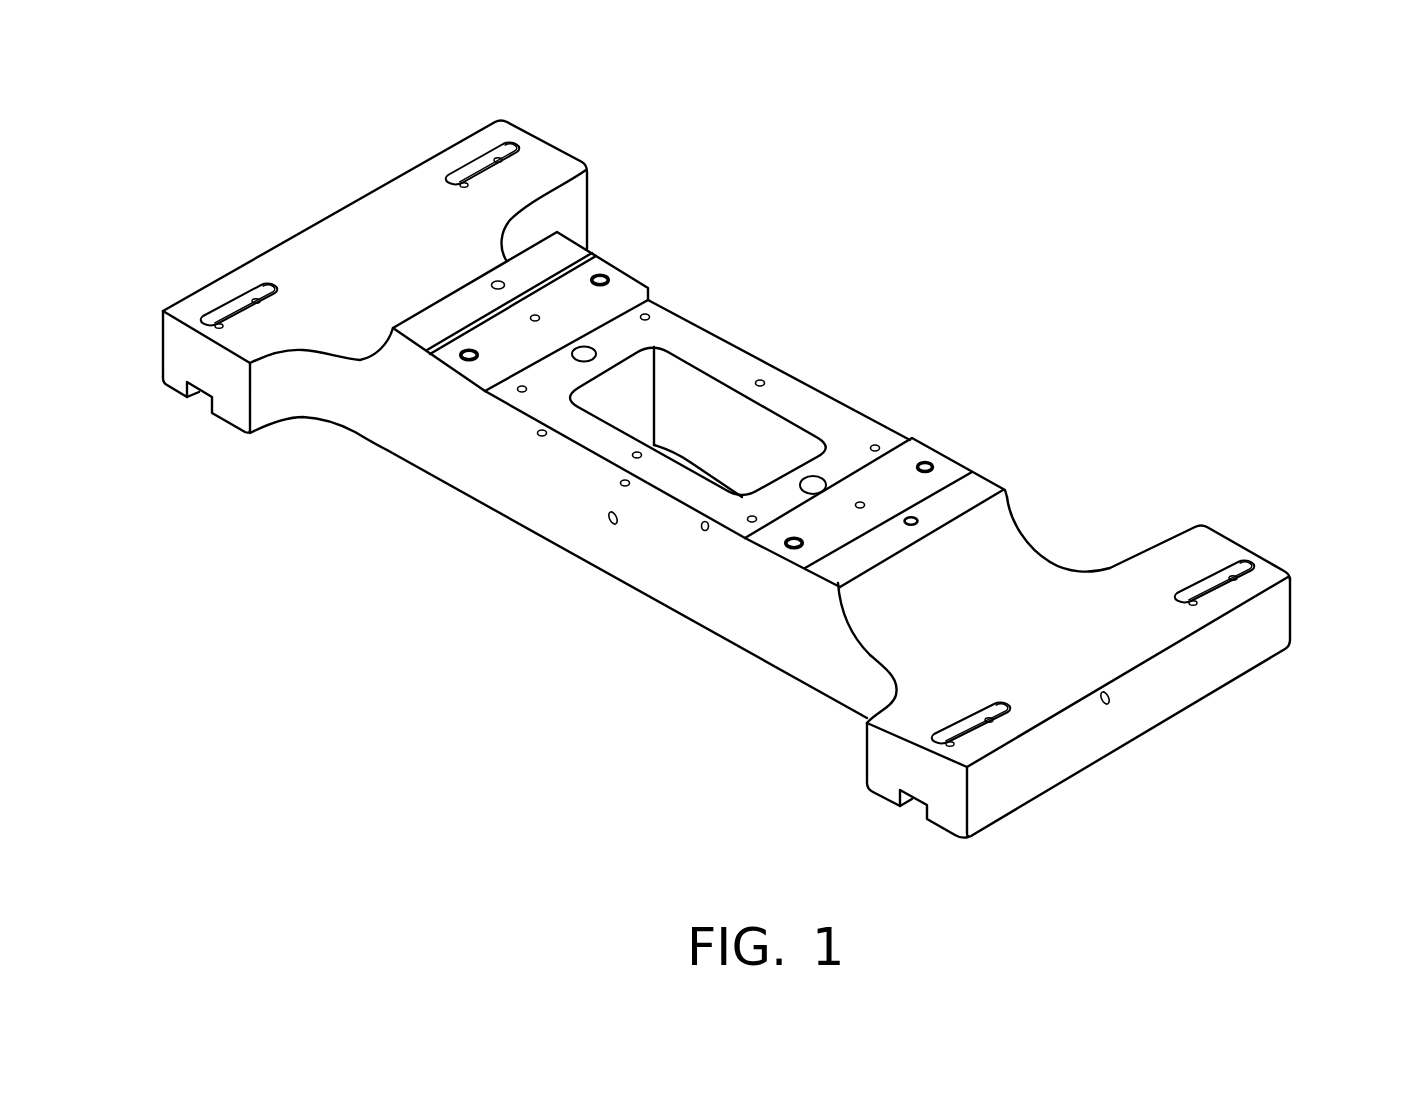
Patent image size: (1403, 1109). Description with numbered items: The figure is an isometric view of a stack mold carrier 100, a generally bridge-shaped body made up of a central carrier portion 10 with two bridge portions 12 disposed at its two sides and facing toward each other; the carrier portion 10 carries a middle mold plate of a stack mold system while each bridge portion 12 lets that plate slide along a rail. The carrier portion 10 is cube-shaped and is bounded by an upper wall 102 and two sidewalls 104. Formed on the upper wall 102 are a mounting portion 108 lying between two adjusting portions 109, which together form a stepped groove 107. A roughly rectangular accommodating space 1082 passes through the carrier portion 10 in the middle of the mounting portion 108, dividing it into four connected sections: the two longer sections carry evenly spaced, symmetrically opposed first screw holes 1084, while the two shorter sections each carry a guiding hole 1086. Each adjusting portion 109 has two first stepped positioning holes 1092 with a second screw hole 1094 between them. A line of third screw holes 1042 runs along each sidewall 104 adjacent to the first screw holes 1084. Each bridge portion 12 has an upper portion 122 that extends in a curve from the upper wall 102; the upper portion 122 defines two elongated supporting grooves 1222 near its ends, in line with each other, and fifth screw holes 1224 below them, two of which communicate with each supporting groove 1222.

The stack mold carrier 100 is at (858, 99).
The carrier portion 10 is at (820, 362).
The upper wall 102 is at (544, 253).
The sidewall 104 is at (570, 510).
The third screw hole 1042 is at (542, 435).
The stepped groove 107 is at (818, 283).
The mounting portion 108 is at (660, 322).
The adjusting portion 109 is at (623, 288).
The first stepped positioning hole 1092 is at (466, 357).
The second screw hole 1094 is at (537, 320).
The accommodating space 1082 is at (713, 457).
The first screw hole 1084 is at (750, 520).
The guiding hole 1086 is at (812, 485).
The bridge portion 12 is at (893, 822).
The upper portion 122 is at (1173, 555).
The supporting groove 1222 is at (1230, 567).
The fifth screw hole 1224 is at (1233, 578).